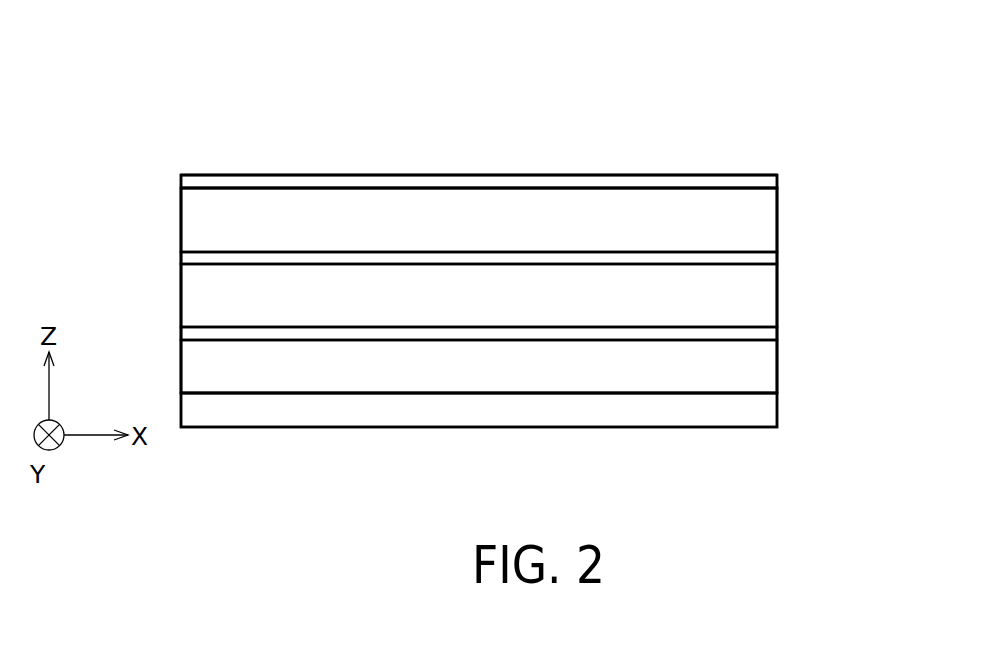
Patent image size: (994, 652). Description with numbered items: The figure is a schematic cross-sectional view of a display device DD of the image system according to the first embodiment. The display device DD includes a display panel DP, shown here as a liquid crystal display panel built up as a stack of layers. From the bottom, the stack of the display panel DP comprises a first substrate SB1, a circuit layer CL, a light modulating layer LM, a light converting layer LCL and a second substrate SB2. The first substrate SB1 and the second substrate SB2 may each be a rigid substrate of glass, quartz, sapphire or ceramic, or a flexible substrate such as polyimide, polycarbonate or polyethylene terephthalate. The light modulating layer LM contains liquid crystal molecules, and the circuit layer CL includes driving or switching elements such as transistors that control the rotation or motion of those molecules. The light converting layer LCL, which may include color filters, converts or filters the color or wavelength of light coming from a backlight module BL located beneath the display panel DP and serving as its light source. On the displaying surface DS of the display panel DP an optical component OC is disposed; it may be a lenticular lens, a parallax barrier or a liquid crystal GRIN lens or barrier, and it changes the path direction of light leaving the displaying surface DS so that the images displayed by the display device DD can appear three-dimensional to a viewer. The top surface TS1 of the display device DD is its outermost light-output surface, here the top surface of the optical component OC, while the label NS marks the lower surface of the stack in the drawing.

The display device DD is at (160, 82).
The displaying surface DS is at (242, 187).
The top surface TS1 is at (577, 173).
The non-display surface / bottom surface NS is at (234, 394).
The optical component OC is at (779, 183).
The second substrate SB2 is at (779, 222).
The light converting layer LCL is at (779, 261).
The light modulating layer LM is at (779, 300).
The circuit layer CL is at (779, 335).
The first substrate SB1 is at (779, 371).
The backlight module BL is at (779, 411).
The display panel DP is at (860, 203).